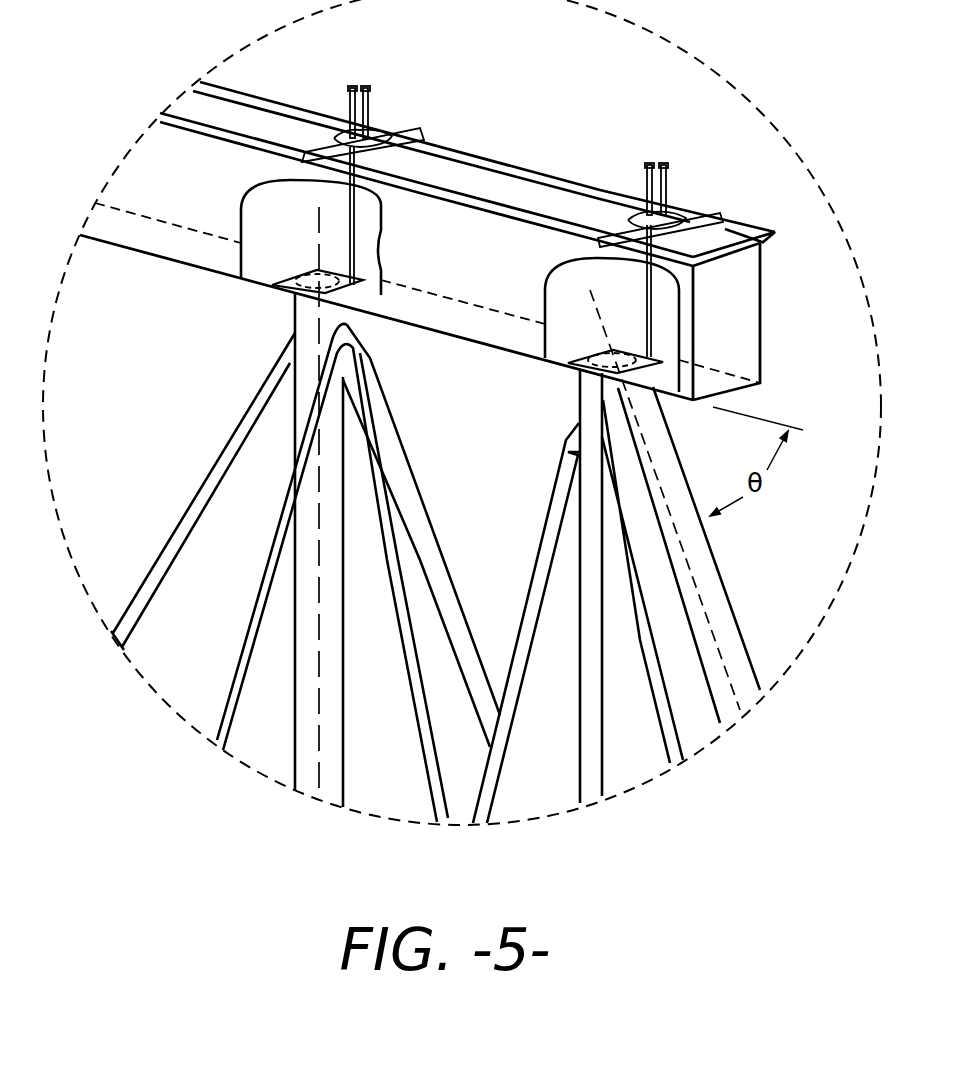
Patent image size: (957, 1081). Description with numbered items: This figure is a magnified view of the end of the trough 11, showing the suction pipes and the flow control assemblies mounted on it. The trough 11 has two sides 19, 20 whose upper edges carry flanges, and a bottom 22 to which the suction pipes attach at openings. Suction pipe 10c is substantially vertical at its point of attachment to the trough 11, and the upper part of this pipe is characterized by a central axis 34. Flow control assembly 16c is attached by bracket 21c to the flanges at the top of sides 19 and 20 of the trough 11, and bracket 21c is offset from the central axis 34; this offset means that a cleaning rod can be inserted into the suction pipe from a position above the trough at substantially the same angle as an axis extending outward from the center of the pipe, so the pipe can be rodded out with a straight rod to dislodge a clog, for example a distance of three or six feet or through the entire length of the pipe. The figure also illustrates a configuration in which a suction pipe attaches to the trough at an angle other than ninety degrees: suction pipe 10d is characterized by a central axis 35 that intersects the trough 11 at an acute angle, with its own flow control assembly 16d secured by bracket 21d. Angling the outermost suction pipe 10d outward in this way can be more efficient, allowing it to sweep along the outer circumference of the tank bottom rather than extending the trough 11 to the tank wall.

The trough 11 is at (452, 214).
The side 19 is at (197, 102).
The side 20 is at (150, 158).
The bottom 22 is at (740, 394).
The flow control assembly 16c is at (376, 123).
The flow control assembly 16d is at (674, 200).
The bracket 21c is at (335, 132).
The bracket 21d is at (638, 218).
The suction pipe 10c is at (343, 762).
The suction pipe 10d is at (733, 607).
The central axis 34 is at (318, 726).
The central axis 35 is at (720, 637).